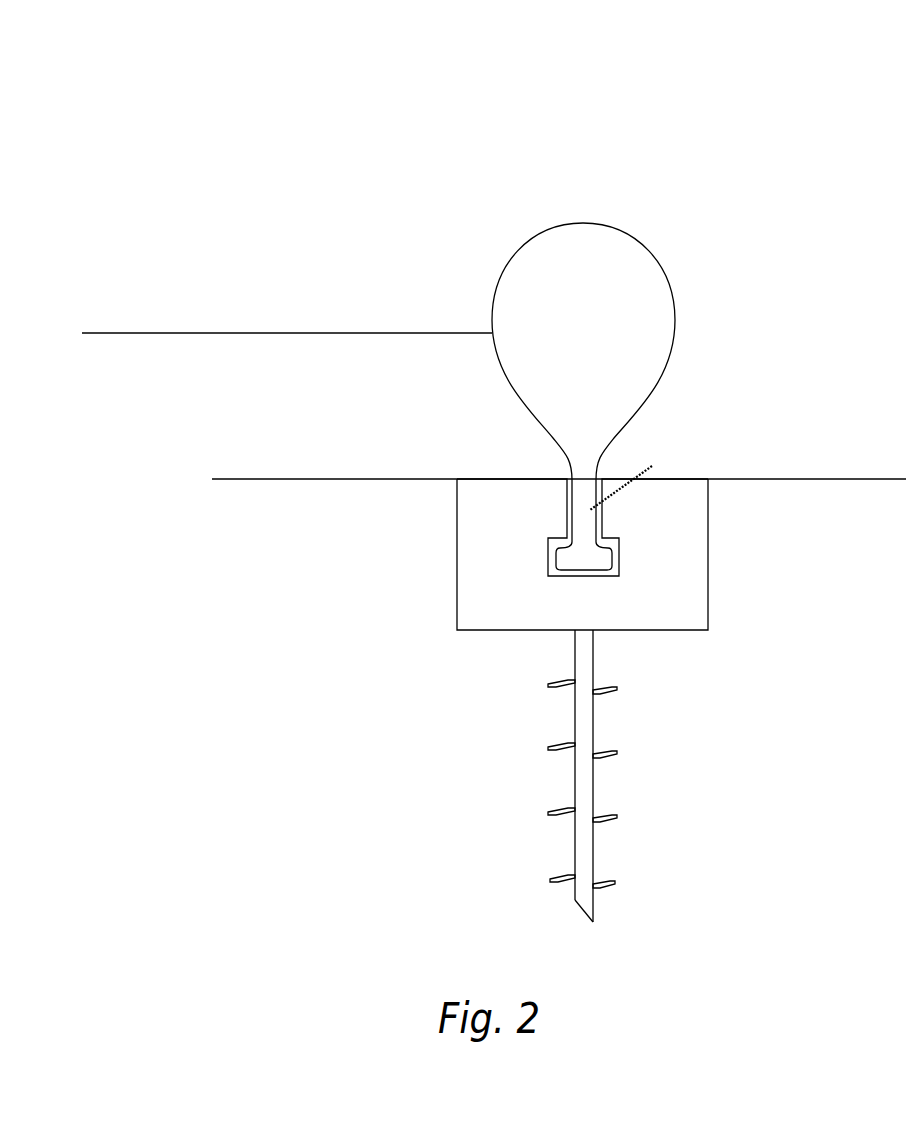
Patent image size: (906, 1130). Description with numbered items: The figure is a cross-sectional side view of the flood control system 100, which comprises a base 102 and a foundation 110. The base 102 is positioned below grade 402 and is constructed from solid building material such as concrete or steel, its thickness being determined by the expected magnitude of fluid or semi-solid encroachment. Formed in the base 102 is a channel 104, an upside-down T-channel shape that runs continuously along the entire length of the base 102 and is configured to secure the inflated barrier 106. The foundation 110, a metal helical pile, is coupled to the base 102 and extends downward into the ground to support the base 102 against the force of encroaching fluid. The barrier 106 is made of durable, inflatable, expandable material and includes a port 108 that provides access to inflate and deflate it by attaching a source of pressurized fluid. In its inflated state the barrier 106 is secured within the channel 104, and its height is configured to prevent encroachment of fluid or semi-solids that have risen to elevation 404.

The flood control system 100 is at (740, 88).
The base 102 is at (468, 602).
The channel 104 is at (568, 510).
The barrier 106 is at (628, 253).
The port 108 is at (587, 510).
The foundation 110 is at (593, 802).
The grade 402 is at (529, 477).
The elevation 404 is at (259, 333).